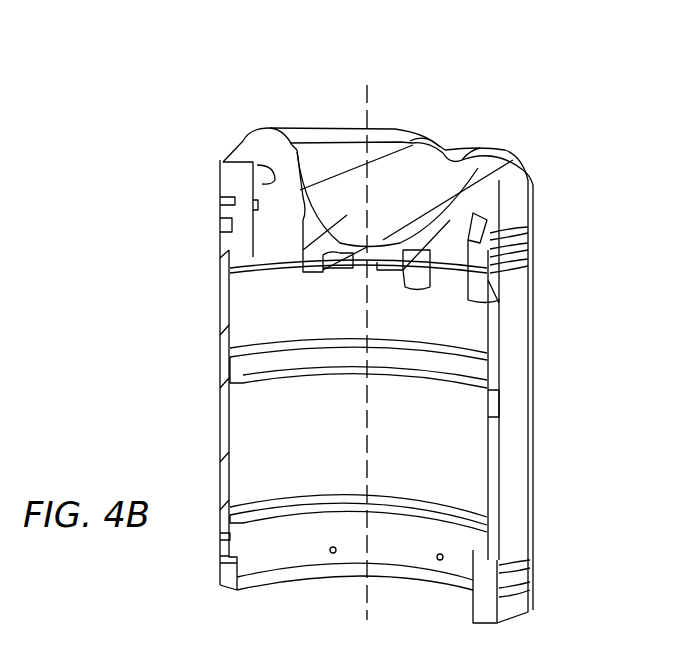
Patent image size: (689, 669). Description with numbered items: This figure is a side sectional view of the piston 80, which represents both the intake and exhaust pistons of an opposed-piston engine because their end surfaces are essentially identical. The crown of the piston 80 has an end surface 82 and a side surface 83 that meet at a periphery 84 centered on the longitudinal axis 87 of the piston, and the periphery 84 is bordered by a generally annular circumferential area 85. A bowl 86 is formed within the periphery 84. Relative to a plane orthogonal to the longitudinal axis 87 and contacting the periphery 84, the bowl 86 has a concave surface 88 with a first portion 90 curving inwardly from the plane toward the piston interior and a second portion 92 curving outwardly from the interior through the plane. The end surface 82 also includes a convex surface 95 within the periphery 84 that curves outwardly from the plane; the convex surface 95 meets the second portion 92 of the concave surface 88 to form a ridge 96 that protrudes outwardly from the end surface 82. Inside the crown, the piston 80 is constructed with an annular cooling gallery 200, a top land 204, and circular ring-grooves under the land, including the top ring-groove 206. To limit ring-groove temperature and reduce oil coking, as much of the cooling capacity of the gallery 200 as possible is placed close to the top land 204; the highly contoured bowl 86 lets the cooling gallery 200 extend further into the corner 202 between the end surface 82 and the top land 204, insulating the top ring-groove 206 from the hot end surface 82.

The piston 80 is at (553, 427).
The end surface 82 is at (344, 95).
The side surface 83 is at (222, 265).
The periphery 84 is at (493, 152).
The circumferential area 85 is at (523, 170).
The bowl 86 is at (343, 170).
The longitudinal axis 87 is at (368, 110).
The concave surface 88 is at (417, 203).
The first portion 90 is at (475, 170).
The second portion 92 is at (413, 167).
The convex surface 95 is at (247, 137).
The ridge 96 is at (272, 131).
The annular cooling gallery 200 is at (275, 207).
The corner 202 is at (255, 158).
The top land 204 is at (221, 185).
The top ring-groove 206 is at (221, 200).